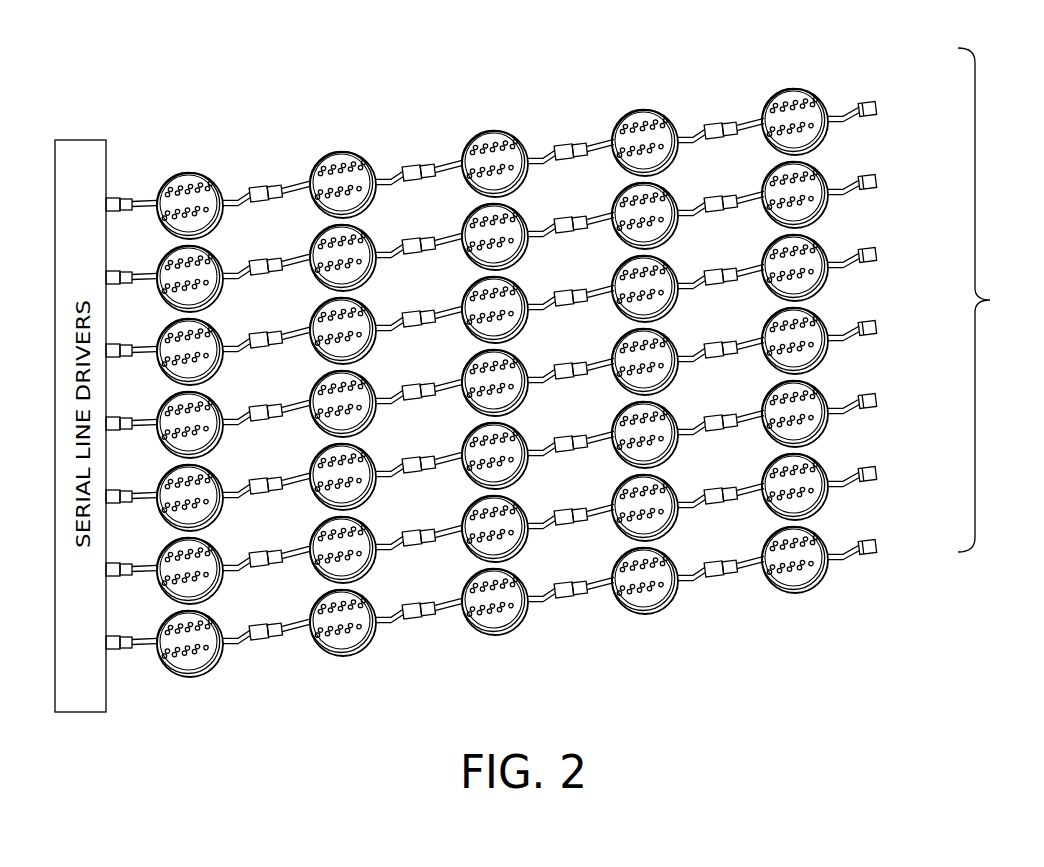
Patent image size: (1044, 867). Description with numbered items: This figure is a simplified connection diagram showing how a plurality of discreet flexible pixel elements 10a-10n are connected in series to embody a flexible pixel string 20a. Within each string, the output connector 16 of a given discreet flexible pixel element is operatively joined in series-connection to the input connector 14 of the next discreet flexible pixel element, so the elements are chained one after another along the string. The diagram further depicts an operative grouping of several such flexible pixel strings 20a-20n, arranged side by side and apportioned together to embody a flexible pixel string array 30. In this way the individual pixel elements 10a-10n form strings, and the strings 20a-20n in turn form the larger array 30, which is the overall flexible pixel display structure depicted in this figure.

The discreet flexible pixel element 10a is at (185, 178).
The discreet flexible pixel element 10n is at (803, 100).
The input connector 14 is at (427, 160).
The output connector 16 is at (413, 165).
The flexible pixel string 20a is at (868, 102).
The flexible pixel string 20n is at (875, 540).
The flexible pixel string array 30 is at (992, 300).